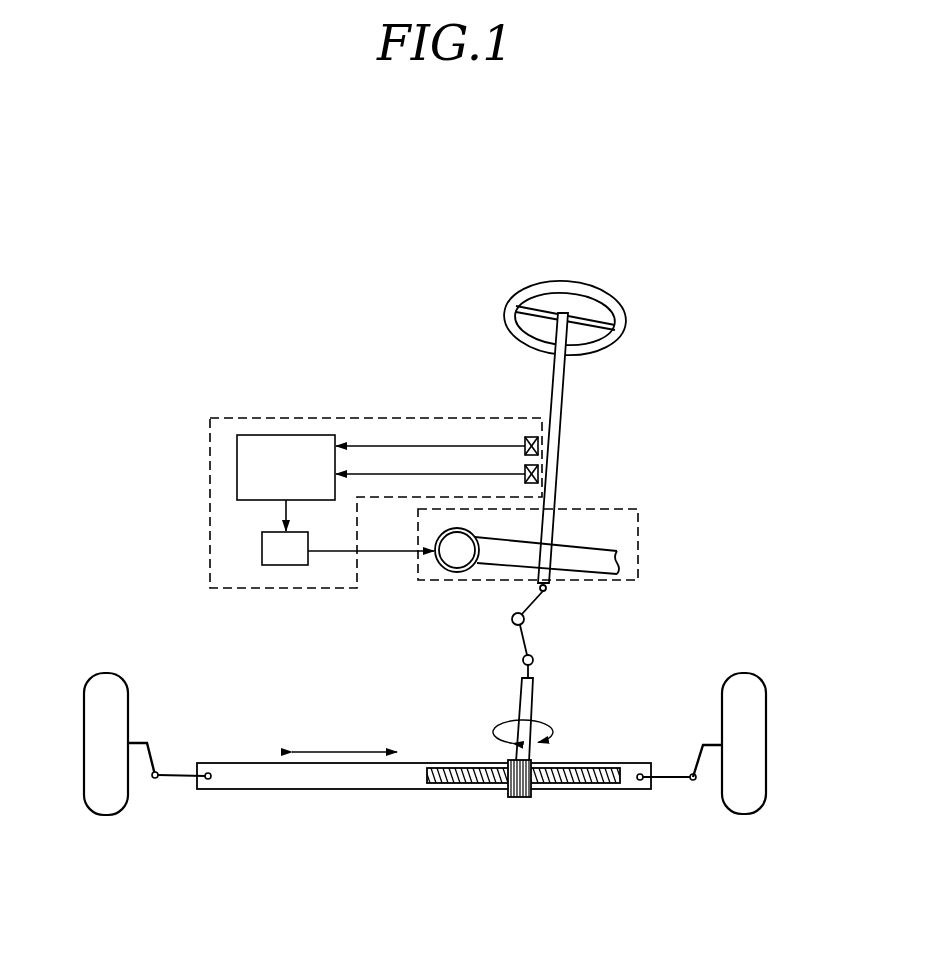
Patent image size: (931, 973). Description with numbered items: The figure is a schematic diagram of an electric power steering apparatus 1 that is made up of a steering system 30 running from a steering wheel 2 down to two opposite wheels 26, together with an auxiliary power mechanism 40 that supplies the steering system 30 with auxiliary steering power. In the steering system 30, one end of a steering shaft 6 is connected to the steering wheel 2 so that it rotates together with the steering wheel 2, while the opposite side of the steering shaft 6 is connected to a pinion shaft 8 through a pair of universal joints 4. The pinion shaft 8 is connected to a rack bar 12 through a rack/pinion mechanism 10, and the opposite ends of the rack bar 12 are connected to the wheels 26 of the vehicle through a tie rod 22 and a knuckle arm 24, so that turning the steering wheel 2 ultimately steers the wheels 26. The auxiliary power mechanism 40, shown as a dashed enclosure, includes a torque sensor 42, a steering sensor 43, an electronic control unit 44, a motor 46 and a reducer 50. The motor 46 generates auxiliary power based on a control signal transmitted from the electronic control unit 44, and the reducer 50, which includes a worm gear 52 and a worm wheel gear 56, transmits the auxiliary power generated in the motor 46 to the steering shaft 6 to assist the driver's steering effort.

The steering system 1 is at (138, 225).
The steering wheel 2 is at (536, 292).
The universal joints 4 is at (532, 605).
The steering shaft 6 is at (563, 411).
The pinion shaft 8 is at (518, 706).
The rack/pinion mechanism 10 is at (521, 797).
The rack bar 12 is at (270, 772).
The tie rod 22 is at (676, 775).
The knuckle arm 24 is at (142, 743).
The wheels 26 is at (752, 686).
The steering system 30 is at (569, 396).
The auxiliary power mechanism 40 is at (210, 457).
The torque sensor 42 is at (525, 473).
The steering sensor 43 is at (525, 444).
The electronic control unit 44 is at (257, 447).
The motor 46 is at (262, 548).
The reducer 50 is at (638, 561).
The worm gear 52 is at (440, 562).
The worm wheel gear 56 is at (557, 543).